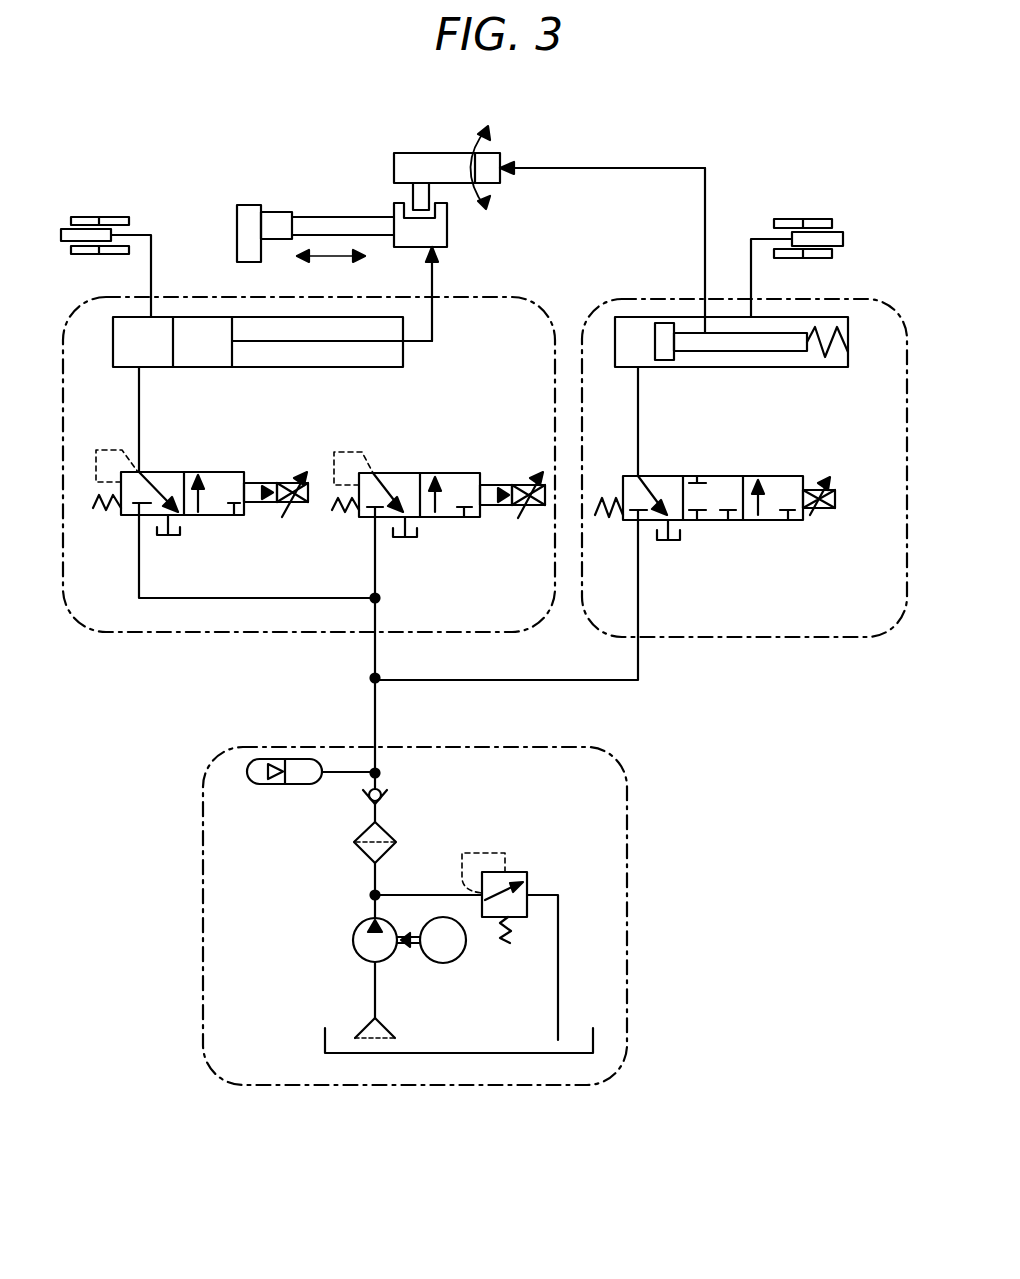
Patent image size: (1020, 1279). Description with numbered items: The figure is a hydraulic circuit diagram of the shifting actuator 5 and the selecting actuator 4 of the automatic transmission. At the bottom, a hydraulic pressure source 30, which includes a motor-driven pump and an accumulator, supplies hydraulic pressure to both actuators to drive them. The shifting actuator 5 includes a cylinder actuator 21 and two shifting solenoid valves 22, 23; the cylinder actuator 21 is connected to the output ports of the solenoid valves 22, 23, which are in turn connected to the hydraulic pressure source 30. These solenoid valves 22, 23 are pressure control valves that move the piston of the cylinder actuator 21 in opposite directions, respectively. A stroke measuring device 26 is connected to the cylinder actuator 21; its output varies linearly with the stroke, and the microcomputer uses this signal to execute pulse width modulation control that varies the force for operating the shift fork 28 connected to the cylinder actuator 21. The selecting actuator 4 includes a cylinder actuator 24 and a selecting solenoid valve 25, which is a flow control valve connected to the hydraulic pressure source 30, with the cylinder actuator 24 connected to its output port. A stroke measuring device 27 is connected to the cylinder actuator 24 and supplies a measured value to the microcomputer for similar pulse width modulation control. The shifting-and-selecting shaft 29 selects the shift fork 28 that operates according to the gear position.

The selecting actuator 4 is at (762, 638).
The shifting actuator 5 is at (152, 633).
The cylinder actuator 21 is at (258, 368).
The shifting solenoid valve 22 is at (165, 472).
The shifting solenoid valve 23 is at (400, 473).
The cylinder actuator 24 is at (760, 367).
The selecting solenoid valve 25 is at (772, 520).
The stroke measuring device 26 is at (88, 216).
The stroke measuring device 27 is at (790, 219).
The shift fork 28 is at (320, 218).
The shifting-and-selecting shaft 29 is at (420, 160).
The hydraulic pressure source 30 is at (627, 812).